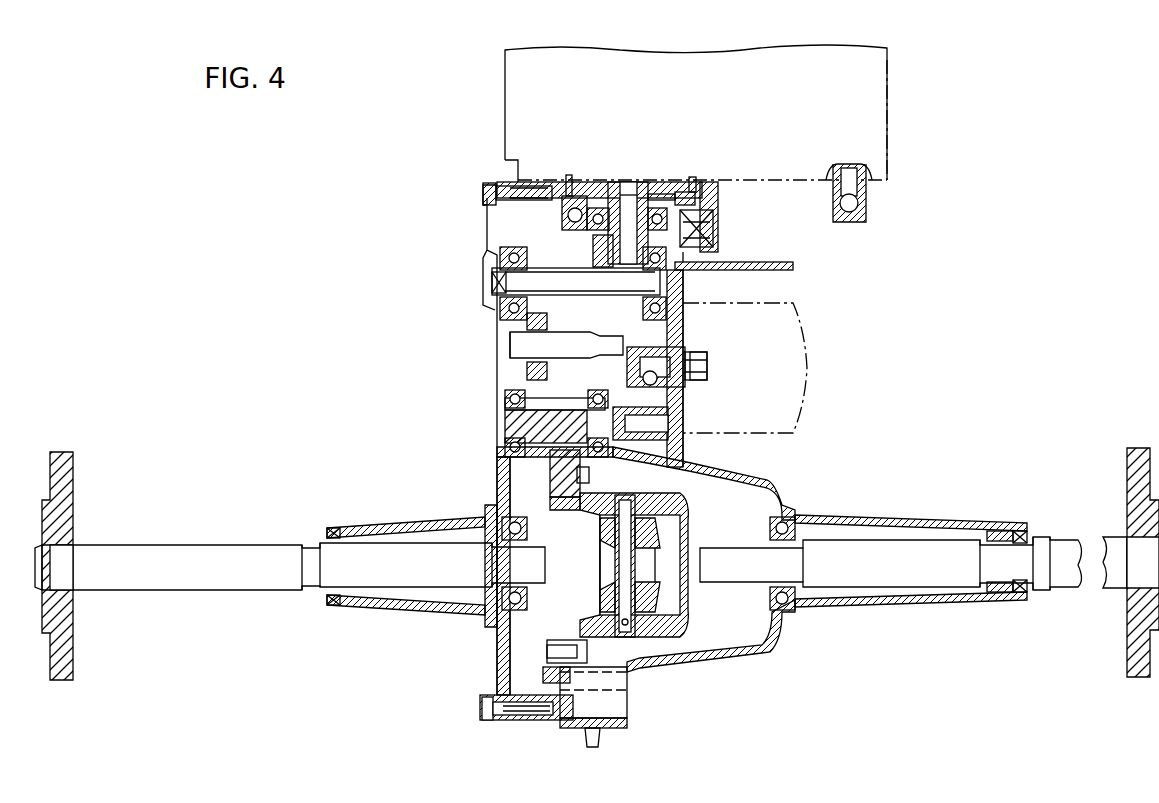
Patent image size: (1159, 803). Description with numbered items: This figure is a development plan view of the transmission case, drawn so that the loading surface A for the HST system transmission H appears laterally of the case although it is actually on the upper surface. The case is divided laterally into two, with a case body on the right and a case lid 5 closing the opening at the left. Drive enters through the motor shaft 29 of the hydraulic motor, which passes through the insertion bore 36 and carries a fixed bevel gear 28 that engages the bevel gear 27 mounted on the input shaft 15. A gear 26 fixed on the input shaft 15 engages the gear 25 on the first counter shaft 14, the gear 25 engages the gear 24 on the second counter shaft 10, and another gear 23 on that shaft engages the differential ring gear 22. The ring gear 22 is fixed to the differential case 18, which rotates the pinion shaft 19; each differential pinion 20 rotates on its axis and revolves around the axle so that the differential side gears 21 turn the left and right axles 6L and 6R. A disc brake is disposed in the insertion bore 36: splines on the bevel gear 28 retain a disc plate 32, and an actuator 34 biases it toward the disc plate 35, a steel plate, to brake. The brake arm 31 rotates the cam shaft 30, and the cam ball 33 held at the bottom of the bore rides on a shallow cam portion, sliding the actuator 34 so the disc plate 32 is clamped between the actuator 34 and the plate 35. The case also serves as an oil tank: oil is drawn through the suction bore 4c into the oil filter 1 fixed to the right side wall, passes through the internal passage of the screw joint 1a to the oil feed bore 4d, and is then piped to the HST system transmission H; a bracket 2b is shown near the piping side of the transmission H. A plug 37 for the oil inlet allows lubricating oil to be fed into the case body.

The HST system transmission H is at (626, 50).
The mounting bracket 2b is at (866, 218).
The loading surface A is at (722, 179).
The oil filter 1 is at (775, 357).
The screw joint 1a is at (710, 352).
The suction bore 4c is at (623, 407).
The oil feed bore 4d is at (637, 351).
The case lid 5 is at (468, 518).
The right axle 6R is at (197, 580).
The left axle 6L is at (1057, 540).
The second counter shaft 10 is at (505, 417).
The first counter shaft 14 is at (520, 345).
The input shaft 15 is at (485, 278).
The differential case 18 is at (677, 521).
The pinion shaft 19 is at (632, 525).
The differential pinion 20 is at (643, 620).
The differential side gear 21 is at (667, 593).
The differential ring gear 22 is at (547, 687).
The gear 23 is at (557, 408).
The gear 24 is at (534, 470).
The gear 25 is at (532, 323).
The gear 26 is at (532, 257).
The bevel gear 27 is at (595, 250).
The bevel gear 28 is at (627, 250).
The motor shaft 29 is at (630, 198).
The cam shaft 30 is at (701, 233).
The brake arm 31 is at (758, 262).
The disc plate 32 is at (662, 193).
The cam ball 33 is at (585, 192).
The actuator 34 is at (708, 195).
The disc plate 35 is at (683, 192).
The insertion bore 36 is at (601, 188).
The plug 37 is at (607, 730).